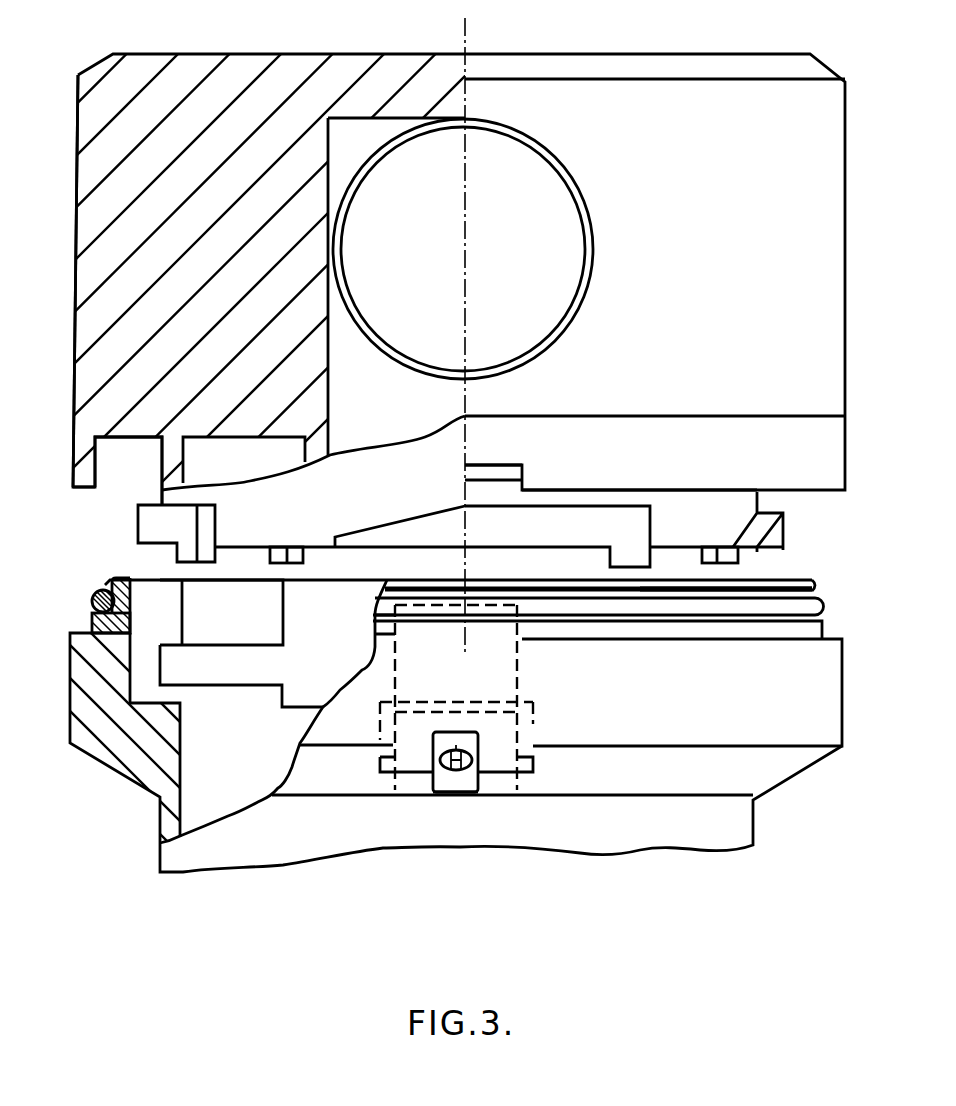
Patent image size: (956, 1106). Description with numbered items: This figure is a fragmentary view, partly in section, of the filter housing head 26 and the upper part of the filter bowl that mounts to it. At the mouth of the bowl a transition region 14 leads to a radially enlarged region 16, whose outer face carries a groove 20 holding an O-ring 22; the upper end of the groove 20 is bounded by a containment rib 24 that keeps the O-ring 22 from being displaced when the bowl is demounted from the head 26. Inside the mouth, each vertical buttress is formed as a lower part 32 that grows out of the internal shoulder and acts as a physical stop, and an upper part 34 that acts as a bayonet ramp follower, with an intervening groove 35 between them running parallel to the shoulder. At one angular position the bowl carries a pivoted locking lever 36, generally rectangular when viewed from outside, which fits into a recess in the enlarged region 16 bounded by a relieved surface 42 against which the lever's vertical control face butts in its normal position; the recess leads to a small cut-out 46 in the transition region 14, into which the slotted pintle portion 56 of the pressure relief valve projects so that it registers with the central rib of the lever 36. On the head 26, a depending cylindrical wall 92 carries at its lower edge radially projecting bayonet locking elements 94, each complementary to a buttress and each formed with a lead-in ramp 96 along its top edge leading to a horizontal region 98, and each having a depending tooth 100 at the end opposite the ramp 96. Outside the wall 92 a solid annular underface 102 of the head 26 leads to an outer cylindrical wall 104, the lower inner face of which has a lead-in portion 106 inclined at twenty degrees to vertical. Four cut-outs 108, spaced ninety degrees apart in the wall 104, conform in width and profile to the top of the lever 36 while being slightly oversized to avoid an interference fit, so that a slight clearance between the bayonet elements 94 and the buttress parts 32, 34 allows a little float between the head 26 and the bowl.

The transition region 14 is at (790, 770).
The radially enlarged region 16 is at (828, 714).
The groove 20 is at (781, 582).
The O-ring 22 is at (824, 606).
The containment rib 24 is at (814, 588).
The filter housing head 26 is at (410, 50).
The lower part of buttress 32 is at (256, 698).
The upper part of buttress 34 is at (227, 632).
The groove 35 is at (268, 666).
The locking lever 36 is at (503, 679).
The relieved surface 42 is at (522, 652).
The cut-out 46 is at (517, 786).
The pintle portion 56 is at (472, 754).
The depending cylindrical wall 92 is at (188, 462).
The bayonet locking elements 94 is at (594, 505).
The lead-in ramp 96 is at (418, 516).
The horizontal region 98 is at (535, 503).
The depending tooth 100 is at (293, 545).
The solid annular underface 102 is at (122, 441).
The outer cylindrical wall 104 is at (76, 442).
The lead-in portion 106 is at (96, 490).
The cut-outs 108 is at (500, 462).